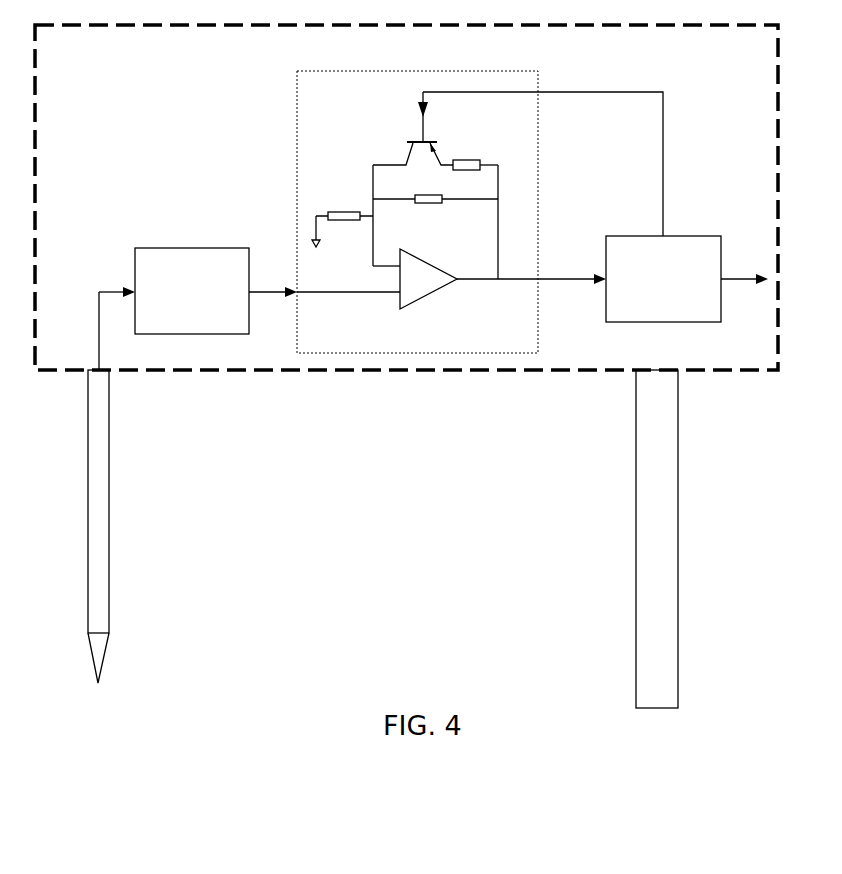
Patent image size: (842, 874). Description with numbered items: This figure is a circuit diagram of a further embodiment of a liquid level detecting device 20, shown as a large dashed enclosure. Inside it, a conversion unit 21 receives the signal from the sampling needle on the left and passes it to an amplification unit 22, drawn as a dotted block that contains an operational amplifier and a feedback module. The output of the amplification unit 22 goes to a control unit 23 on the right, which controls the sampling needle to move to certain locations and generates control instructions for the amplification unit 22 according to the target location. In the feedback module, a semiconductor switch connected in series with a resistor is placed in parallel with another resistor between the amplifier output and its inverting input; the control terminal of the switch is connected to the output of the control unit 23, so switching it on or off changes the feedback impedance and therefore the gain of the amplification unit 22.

The liquid level detecting device 20 is at (305, 372).
The conversion unit 21 is at (182, 342).
The amplification unit 22 is at (396, 358).
The control unit 23 is at (682, 326).